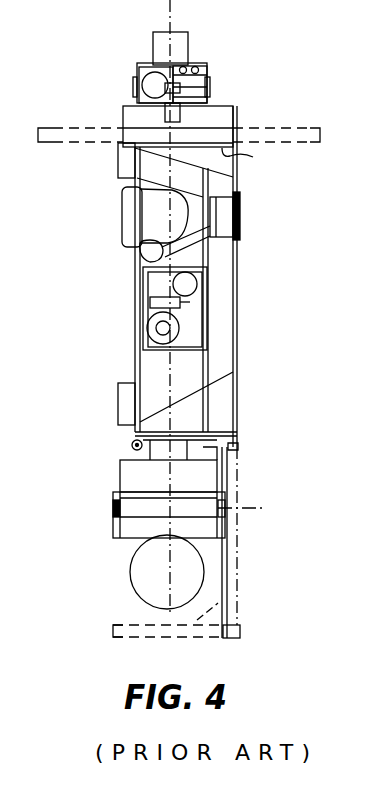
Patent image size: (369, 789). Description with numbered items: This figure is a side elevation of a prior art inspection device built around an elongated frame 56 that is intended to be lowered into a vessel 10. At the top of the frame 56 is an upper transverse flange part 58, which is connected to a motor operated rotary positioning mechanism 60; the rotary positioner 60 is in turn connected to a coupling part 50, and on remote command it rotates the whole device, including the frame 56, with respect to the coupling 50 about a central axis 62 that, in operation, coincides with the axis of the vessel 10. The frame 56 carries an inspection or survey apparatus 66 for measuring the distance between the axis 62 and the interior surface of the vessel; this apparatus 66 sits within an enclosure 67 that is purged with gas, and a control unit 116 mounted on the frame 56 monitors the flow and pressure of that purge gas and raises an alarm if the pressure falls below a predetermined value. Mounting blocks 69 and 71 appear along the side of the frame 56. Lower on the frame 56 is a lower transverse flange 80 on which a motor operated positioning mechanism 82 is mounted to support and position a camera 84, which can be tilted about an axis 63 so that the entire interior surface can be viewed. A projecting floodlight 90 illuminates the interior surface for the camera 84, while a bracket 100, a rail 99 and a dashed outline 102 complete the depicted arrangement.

The vessel 10 is at (277, 213).
The coupling part 50 is at (188, 45).
The elongated frame 56 is at (237, 336).
The upper transverse flange part 58 is at (226, 102).
The motor operated rotary positioning mechanism 60 is at (136, 88).
The central axis 62 is at (140, 286).
The tilt axis 63 is at (113, 508).
The inspection or survey apparatus 66 is at (132, 342).
The enclosure 67 is at (135, 262).
The mounting block 69 is at (117, 159).
The mounting block 71 is at (118, 403).
The lower transverse flange 80 is at (237, 442).
The motor operated positioning mechanism 82 is at (117, 478).
The camera 84 is at (128, 578).
The projecting floodlight 90 is at (127, 213).
The rail 99 is at (238, 545).
The bracket 100 is at (256, 160).
The vehicle floor 102 is at (43, 128).
The control unit 116 is at (200, 307).